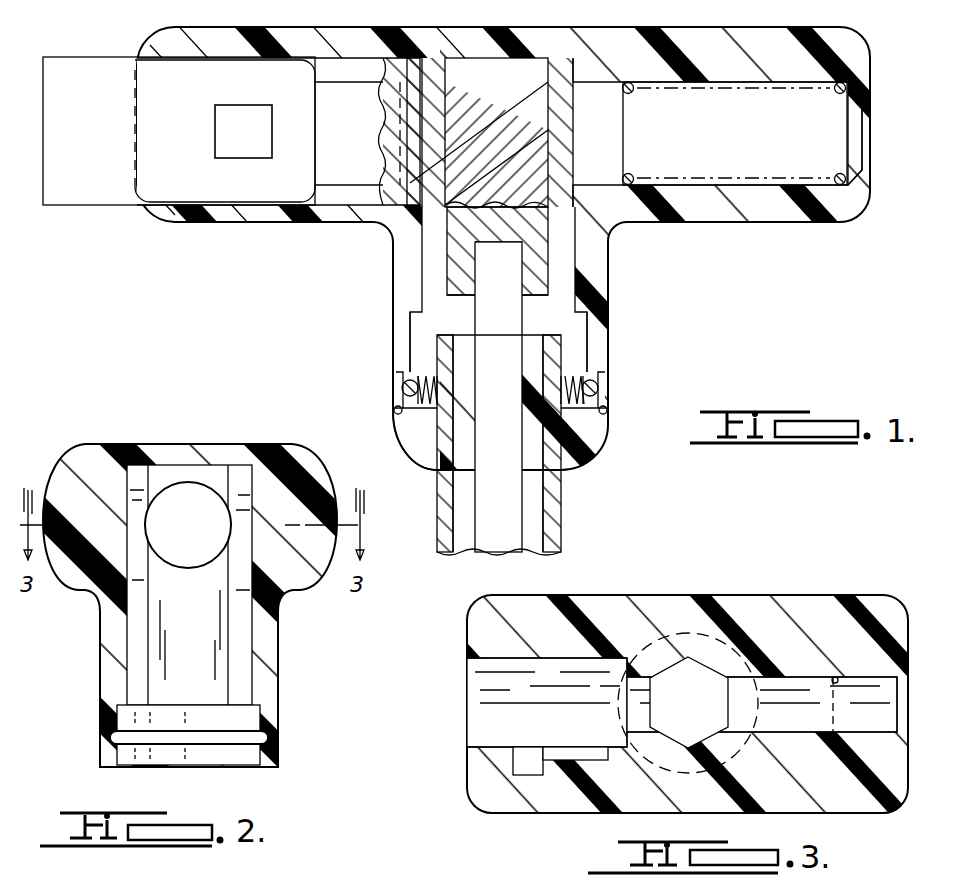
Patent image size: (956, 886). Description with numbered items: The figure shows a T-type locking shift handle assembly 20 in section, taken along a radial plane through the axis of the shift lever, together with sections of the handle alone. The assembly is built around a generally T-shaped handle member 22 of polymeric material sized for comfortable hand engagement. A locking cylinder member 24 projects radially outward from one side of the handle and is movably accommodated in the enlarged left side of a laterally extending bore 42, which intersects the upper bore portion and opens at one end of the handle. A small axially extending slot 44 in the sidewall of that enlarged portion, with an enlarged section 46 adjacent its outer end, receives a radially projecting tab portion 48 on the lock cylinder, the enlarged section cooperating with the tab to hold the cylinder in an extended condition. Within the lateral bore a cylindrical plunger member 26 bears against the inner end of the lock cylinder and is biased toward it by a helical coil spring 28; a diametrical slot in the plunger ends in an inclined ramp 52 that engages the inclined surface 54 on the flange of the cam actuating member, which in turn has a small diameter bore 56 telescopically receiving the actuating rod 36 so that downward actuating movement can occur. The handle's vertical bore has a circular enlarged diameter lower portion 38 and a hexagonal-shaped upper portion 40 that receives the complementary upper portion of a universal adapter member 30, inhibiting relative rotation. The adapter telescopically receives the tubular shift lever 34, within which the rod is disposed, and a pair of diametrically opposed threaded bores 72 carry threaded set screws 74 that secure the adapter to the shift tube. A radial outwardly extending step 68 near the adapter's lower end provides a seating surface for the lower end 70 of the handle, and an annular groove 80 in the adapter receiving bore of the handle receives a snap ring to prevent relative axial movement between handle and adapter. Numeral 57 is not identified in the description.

In FIG. 1, the locking shift handle assembly 20 is at (760, 268).
In FIG. 1, the handle member 22 is at (610, 280).
In FIG. 2, the handle member 22 is at (282, 645).
In FIG. 3, the handle member 22 is at (808, 595).
In FIG. 1, the locking cylinder member 24 is at (75, 205).
In FIG. 1, the plunger member 26 is at (362, 152).
In FIG. 1, the helical coil spring 28 is at (850, 176).
In FIG. 1, the universal adapter member 30 is at (600, 322).
In FIG. 1, the tubular shift lever 34 is at (550, 505).
In FIG. 1, the actuating rod 36 is at (510, 538).
In FIG. 1, the enlarged diameter lower portion 38 is at (436, 460).
In FIG. 2, the enlarged diameter lower portion 38 is at (118, 718).
In FIG. 3, the enlarged diameter lower portion 38 is at (688, 657).
In FIG. 1, the hexagonal-shaped upper portion 40 is at (608, 250).
In FIG. 2, the hexagonal-shaped upper portion 40 is at (130, 630).
In FIG. 3, the hexagonal-shaped upper portion 40 is at (705, 655).
In FIG. 1, the laterally extending bore 42 is at (770, 186).
In FIG. 2, the laterally extending bore 42 is at (188, 484).
In FIG. 3, the laterally extending bore 42 is at (835, 678).
In FIG. 3, the axially extending slot 44 is at (575, 756).
In FIG. 3, the enlarged section 46 is at (525, 770).
In FIG. 1, the tab portion 48 is at (258, 145).
In FIG. 1, the inclined ramp 52 is at (455, 232).
In FIG. 1, the inclined surface 54 is at (470, 146).
In FIG. 1, the small diameter bore 56 is at (480, 268).
In FIG. 1, the guide wall 57 is at (478, 118).
In FIG. 1, the radial outwardly extending step 68 is at (398, 408).
In FIG. 1, the lower end 70 is at (606, 436).
In FIG. 1, the threaded bores 72 is at (412, 383).
In FIG. 1, the threaded set screws 74 is at (420, 404).
In FIG. 1, the annular groove 80 is at (606, 410).
In FIG. 2, the annular groove 80 is at (262, 740).